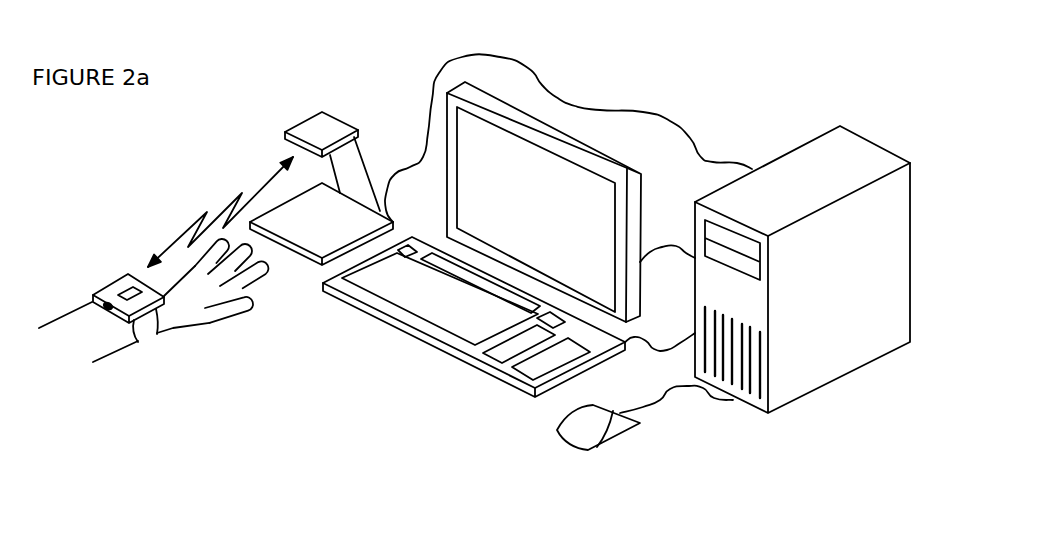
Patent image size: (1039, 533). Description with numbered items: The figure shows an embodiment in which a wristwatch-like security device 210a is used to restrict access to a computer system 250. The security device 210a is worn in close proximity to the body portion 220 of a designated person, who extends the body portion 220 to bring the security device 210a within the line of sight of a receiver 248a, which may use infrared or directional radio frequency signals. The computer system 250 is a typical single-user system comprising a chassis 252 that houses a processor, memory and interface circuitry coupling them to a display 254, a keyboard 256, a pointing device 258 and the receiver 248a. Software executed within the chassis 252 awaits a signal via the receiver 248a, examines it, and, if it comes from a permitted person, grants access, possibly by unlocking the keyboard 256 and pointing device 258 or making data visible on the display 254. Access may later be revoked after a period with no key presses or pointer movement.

The security device 210a is at (88, 284).
The body portion 220 is at (111, 345).
The receiver 248a is at (331, 127).
The computer system 250 is at (750, 126).
The chassis 252 is at (822, 368).
The display 254 is at (518, 110).
The keyboard 256 is at (448, 323).
The pointing device 258 is at (573, 422).